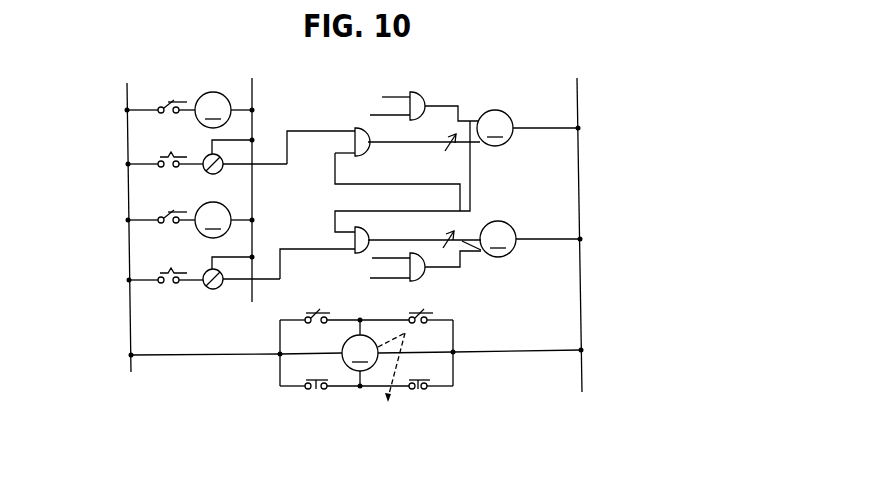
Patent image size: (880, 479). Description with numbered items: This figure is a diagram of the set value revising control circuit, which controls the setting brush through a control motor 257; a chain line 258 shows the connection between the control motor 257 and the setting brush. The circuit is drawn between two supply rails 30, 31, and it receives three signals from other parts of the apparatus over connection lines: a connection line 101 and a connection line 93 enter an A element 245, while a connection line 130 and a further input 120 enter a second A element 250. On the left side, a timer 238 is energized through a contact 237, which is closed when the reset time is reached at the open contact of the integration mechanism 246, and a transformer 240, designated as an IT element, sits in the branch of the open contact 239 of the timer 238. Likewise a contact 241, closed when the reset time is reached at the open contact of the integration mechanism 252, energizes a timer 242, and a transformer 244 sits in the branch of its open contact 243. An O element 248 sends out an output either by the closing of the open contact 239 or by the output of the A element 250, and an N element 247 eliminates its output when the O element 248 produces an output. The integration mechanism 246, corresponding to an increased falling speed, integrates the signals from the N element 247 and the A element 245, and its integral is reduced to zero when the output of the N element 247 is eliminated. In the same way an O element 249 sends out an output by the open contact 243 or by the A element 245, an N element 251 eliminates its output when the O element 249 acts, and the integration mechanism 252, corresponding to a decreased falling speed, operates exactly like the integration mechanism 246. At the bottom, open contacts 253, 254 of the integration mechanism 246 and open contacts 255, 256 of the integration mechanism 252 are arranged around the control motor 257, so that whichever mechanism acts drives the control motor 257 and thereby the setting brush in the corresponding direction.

The supply line 30 is at (126, 217).
The return line 31 is at (415, 227).
The connection line 93 is at (390, 96).
The connection line 101 is at (374, 107).
The signal input 120 is at (372, 258).
The connection line 130 is at (370, 278).
The open contact 237 is at (175, 93).
The timer 238 is at (213, 110).
The open contact of the timer 239 is at (166, 150).
The transformer 240 is at (220, 172).
The open contact 241 is at (168, 203).
The timer 242 is at (213, 220).
The open contact of the timer 243 is at (166, 263).
The transformer 244 is at (220, 287).
The A element 245 is at (430, 95).
The integration mechanism 246 is at (527, 128).
The N element 247 is at (452, 153).
The O element 248 is at (366, 152).
The O element 249 is at (372, 236).
The A element 250 is at (428, 276).
The N element 251 is at (446, 236).
The integration mechanism 252 is at (530, 239).
The open contact of the integration mechanism 253 is at (306, 305).
The open contact of the integration mechanism 254 is at (430, 397).
The open contact of the integration mechanism 255 is at (432, 301).
The open contact of the integration mechanism 256 is at (323, 400).
The control motor 257 is at (366, 353).
The chain line 258 is at (388, 403).